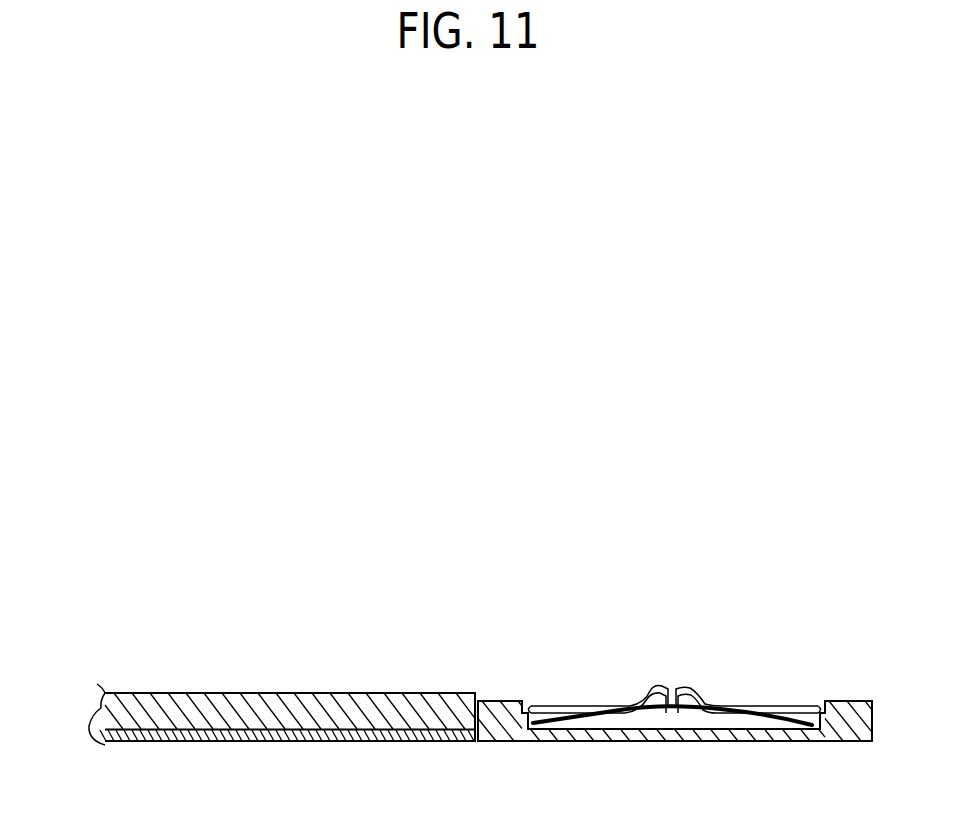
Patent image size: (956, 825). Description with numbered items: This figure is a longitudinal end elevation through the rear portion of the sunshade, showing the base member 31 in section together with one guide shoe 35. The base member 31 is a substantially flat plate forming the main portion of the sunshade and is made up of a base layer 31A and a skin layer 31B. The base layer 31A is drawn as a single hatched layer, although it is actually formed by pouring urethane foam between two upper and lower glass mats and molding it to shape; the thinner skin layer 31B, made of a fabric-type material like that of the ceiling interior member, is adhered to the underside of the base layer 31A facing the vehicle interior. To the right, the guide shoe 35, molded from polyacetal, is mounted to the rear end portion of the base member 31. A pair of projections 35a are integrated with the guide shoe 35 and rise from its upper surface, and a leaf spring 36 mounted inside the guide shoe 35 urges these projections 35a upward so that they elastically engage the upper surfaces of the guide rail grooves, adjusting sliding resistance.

The base member 31 is at (92, 712).
The base layer 31A is at (287, 710).
The skin layer 31B is at (302, 743).
The guide shoe 35 is at (750, 741).
The projection 35a is at (688, 692).
The leaf spring 36 is at (616, 712).